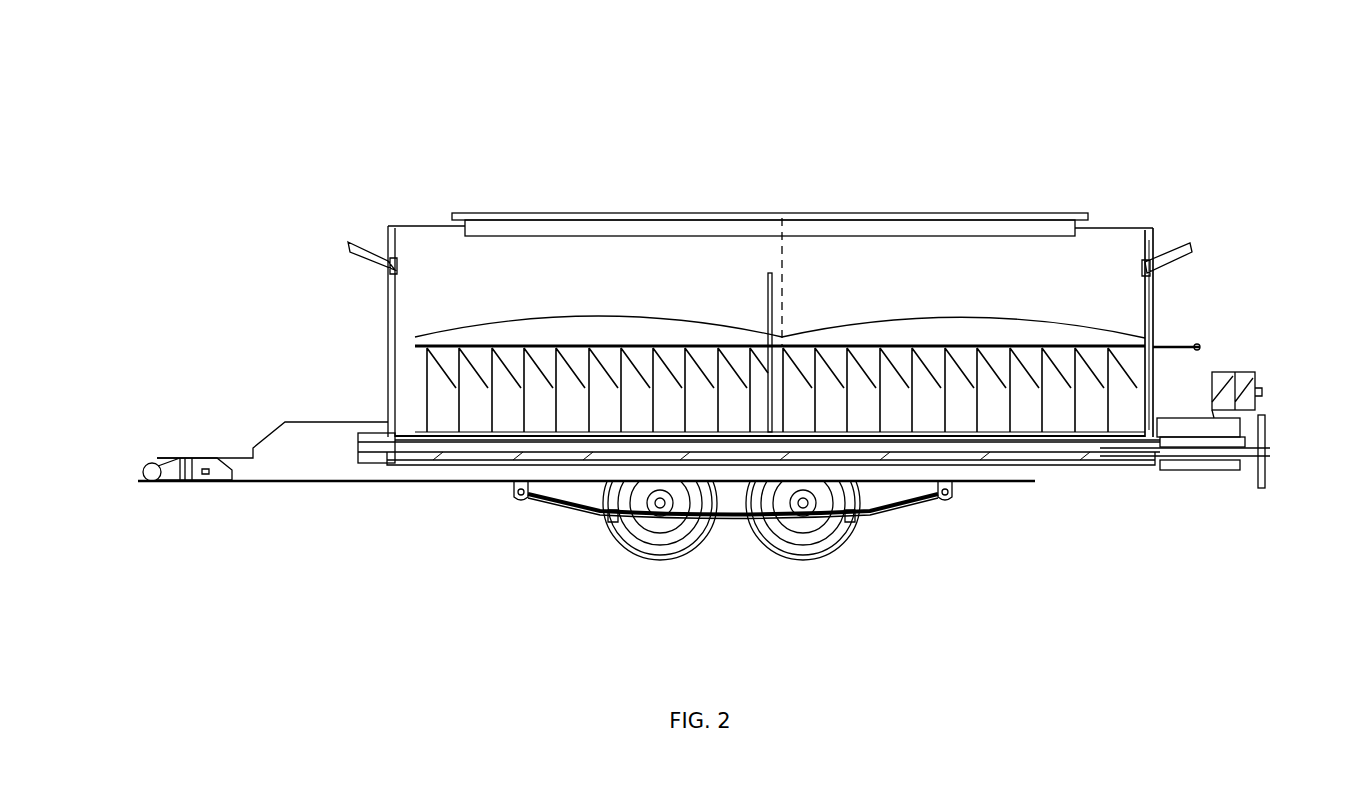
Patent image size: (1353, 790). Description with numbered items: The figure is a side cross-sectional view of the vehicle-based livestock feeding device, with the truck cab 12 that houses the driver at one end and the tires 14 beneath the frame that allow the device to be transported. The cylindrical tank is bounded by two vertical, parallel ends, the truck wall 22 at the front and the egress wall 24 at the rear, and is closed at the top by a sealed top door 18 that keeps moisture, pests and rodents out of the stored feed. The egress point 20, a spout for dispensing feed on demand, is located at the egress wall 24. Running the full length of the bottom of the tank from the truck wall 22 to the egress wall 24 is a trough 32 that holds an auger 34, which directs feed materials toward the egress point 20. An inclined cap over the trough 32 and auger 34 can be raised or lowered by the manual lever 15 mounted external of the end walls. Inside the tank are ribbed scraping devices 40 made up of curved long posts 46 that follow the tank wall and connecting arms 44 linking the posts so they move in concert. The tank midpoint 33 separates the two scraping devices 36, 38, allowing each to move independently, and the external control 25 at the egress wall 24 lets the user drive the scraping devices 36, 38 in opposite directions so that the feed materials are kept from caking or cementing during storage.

The truck cab 12 is at (150, 462).
The tires 14 is at (633, 530).
The external control (manual lever) 15 is at (352, 241).
The top door 18 is at (733, 212).
The egress point (spout) 20 is at (1236, 408).
The truck wall (parallel end) 22 is at (385, 222).
The egress wall (rear parallel end) 24 is at (1157, 229).
The external control 25 is at (1198, 344).
The trough 32 is at (410, 458).
The tank midpoint 33 is at (783, 250).
The auger 34 is at (432, 453).
The scraping device 36 is at (598, 316).
The scraping device 38 is at (968, 320).
The ribbed scraping device 40 is at (415, 340).
The connecting arms 44 is at (445, 370).
The curved long posts 46 is at (425, 400).